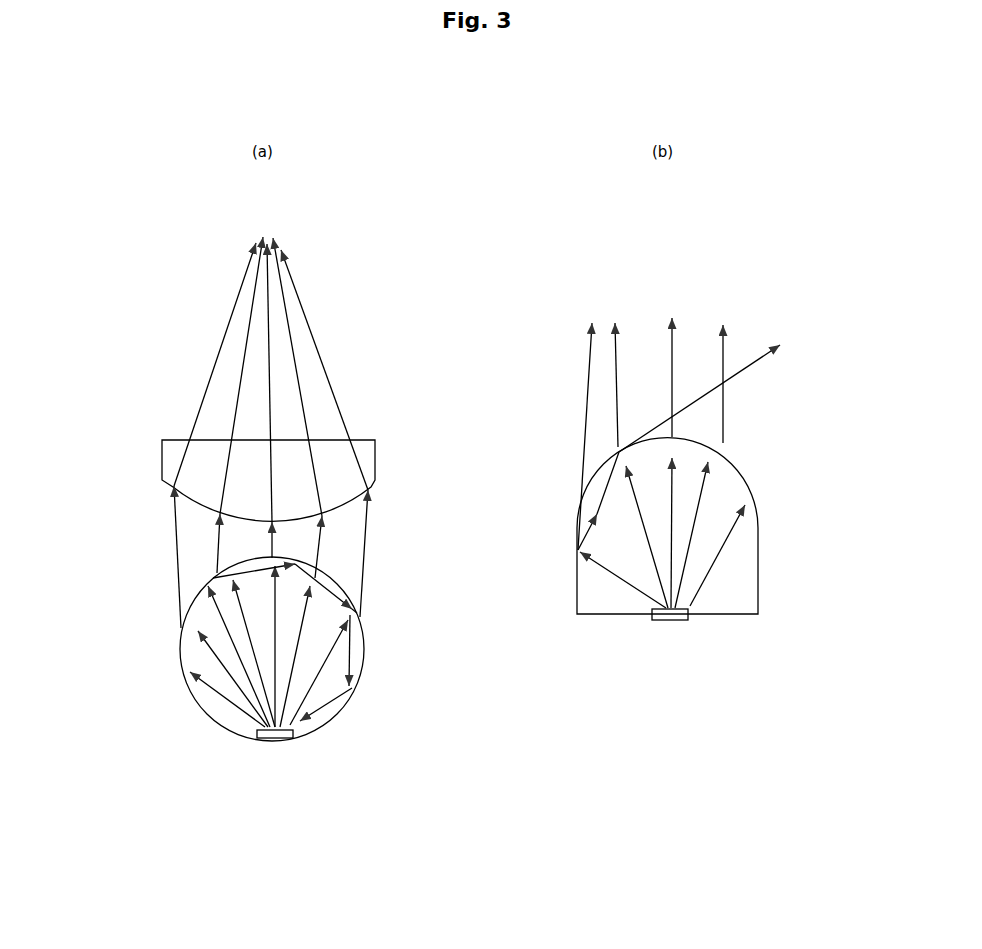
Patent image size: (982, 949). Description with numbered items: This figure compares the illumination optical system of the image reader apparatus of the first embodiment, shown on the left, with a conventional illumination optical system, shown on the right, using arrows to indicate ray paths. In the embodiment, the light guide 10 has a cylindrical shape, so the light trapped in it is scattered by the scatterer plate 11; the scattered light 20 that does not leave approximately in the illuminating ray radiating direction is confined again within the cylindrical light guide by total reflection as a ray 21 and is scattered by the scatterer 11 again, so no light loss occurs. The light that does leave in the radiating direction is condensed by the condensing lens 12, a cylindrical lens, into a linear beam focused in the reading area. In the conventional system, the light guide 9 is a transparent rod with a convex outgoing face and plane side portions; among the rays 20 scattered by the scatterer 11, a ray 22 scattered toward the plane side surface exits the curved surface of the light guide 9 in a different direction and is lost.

The light guide (transparent rod) 9 is at (758, 573).
The cylindrical light guide 10 is at (183, 632).
The scatterer plate 11 is at (265, 737).
The condensing lens 12 is at (163, 453).
The scattered light 20 is at (300, 710).
The ray confined by total reflection 21 is at (215, 687).
The ray scattered toward the side surface 22 is at (603, 566).